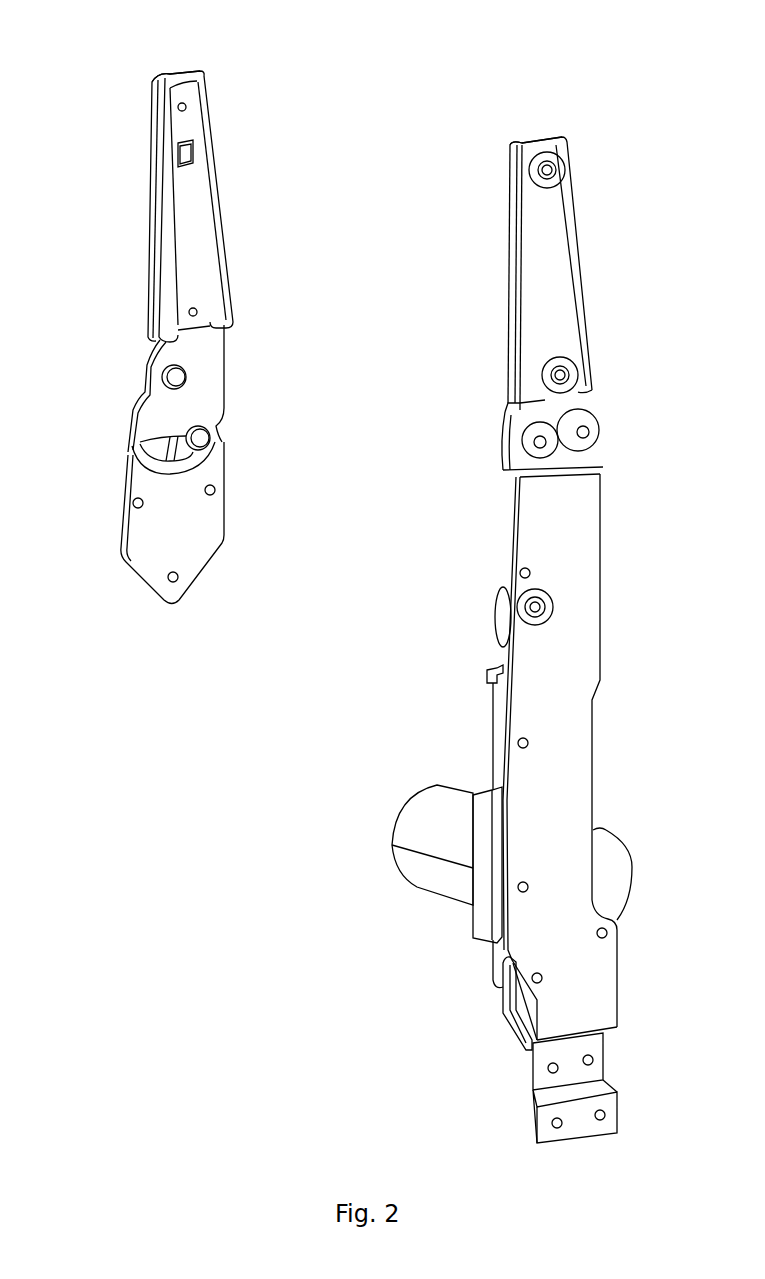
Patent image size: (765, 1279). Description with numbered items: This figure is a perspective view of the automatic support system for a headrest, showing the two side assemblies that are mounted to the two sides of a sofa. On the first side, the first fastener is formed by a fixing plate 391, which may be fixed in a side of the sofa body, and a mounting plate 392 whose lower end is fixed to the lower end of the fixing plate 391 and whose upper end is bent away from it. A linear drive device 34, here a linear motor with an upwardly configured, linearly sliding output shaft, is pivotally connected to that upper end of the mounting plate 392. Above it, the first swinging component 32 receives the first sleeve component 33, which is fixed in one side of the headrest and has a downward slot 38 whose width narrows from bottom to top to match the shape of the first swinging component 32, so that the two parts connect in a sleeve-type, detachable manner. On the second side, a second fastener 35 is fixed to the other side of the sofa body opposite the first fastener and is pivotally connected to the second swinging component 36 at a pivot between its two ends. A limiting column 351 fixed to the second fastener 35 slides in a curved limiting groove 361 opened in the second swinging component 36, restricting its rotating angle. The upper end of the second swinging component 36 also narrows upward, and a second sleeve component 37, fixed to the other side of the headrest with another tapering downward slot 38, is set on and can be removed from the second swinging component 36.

The first swinging component 32 is at (573, 414).
The first sleeve component 33 is at (562, 250).
The linear drive device 34 is at (407, 828).
The second fastener 35 is at (155, 568).
The second swinging component 36 is at (212, 355).
The second sleeve component 37 is at (217, 247).
The slot 38 is at (176, 70).
The limiting column 351 is at (206, 437).
The limiting groove 361 is at (136, 452).
The fixing plate 391 is at (572, 741).
The mounting plate 392 is at (505, 1026).